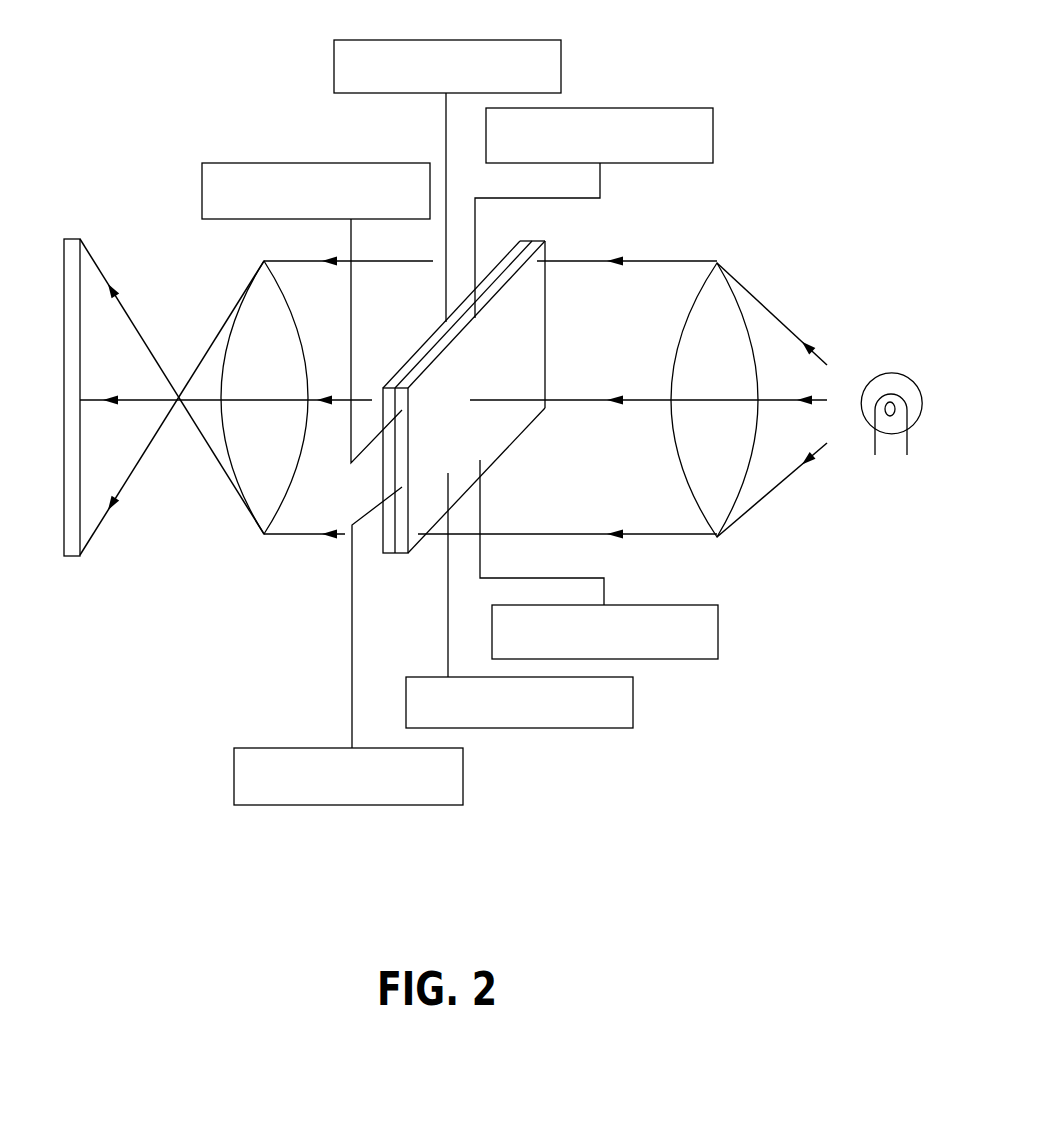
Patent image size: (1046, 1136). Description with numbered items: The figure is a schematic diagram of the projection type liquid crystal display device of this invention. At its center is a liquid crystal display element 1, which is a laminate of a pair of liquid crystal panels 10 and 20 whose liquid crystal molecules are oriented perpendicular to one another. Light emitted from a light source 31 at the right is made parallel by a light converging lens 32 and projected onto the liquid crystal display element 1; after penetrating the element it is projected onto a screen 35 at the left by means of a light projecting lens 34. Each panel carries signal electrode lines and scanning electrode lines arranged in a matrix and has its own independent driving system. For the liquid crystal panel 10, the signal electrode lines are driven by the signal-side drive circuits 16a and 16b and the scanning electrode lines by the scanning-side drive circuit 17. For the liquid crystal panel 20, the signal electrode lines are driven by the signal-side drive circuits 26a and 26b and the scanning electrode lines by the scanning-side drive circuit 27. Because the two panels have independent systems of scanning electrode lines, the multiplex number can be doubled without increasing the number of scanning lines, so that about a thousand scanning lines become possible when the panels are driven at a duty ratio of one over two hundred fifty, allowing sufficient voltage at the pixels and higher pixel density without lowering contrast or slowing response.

The liquid crystal display element 1 is at (486, 428).
The liquid crystal panel 10 is at (545, 243).
The liquid crystal panel 20 is at (516, 256).
The signal-side drive circuit 16a is at (673, 108).
The signal-side drive circuit 16b is at (718, 640).
The signal-side drive circuit 26a is at (633, 712).
The signal-side drive circuit 26b is at (507, 40).
The scanning-side drive circuit 17 is at (271, 162).
The scanning-side drive circuit 27 is at (373, 805).
The light source 31 is at (891, 383).
The light converging lens 32 is at (722, 283).
The light projecting lens 34 is at (250, 475).
The screen 35 is at (78, 238).